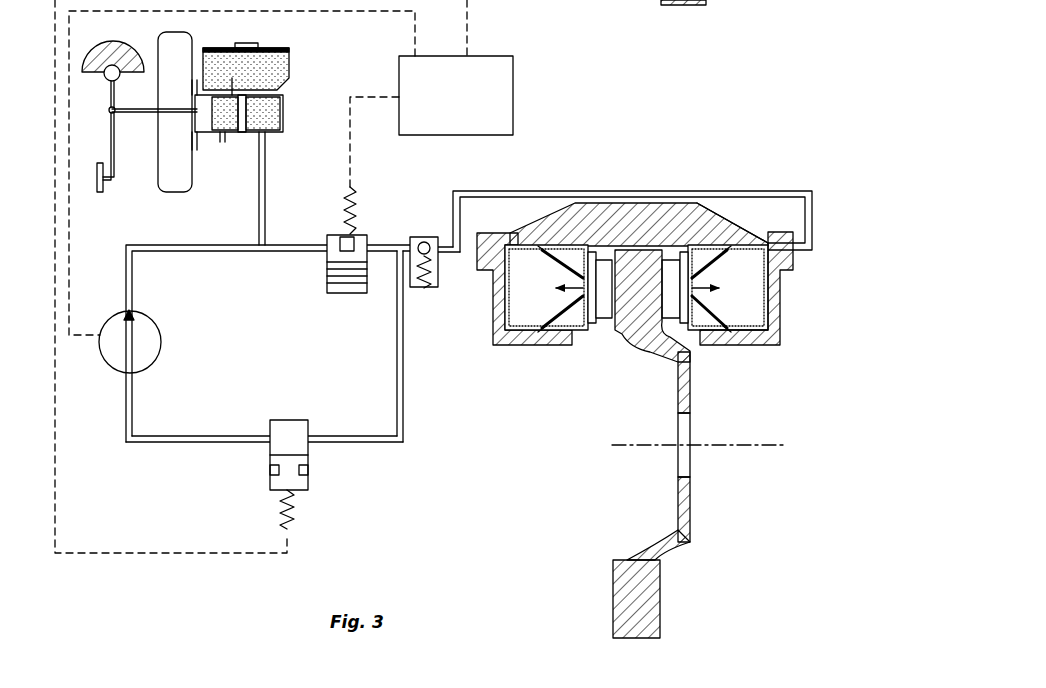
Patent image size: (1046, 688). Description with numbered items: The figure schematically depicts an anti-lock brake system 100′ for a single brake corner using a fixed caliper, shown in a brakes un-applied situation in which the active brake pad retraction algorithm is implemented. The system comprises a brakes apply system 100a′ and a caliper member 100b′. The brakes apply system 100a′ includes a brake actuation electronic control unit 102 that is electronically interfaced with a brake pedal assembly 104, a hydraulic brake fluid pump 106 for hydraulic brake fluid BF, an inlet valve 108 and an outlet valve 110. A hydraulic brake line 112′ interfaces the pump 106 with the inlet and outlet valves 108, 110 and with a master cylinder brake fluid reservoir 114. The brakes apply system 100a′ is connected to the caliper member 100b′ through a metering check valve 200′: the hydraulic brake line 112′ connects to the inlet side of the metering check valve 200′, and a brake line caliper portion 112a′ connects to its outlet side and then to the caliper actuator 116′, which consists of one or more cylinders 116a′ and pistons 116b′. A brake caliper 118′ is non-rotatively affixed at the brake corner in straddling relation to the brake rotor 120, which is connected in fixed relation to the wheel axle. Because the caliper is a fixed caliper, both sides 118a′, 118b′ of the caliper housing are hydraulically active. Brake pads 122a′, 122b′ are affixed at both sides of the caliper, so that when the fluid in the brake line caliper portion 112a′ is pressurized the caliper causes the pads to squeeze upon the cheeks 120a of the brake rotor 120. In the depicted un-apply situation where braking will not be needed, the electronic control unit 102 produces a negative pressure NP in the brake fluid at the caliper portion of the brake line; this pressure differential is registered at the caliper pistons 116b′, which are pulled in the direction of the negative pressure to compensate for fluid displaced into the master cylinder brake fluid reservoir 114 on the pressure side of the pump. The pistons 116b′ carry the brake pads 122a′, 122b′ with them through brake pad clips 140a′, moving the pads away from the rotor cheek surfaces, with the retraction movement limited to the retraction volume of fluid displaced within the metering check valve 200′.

The anti-lock brake system 100′ is at (681, 102).
The brakes apply system 100a′ is at (546, 112).
The caliper member 100b′ is at (688, 160).
The brake actuation electronic control unit 102 is at (513, 68).
The brake pedal assembly 104 is at (103, 147).
The hydraulic brake fluid pump 106 is at (162, 335).
The inlet valve 108 is at (327, 283).
The outlet valve 110 is at (308, 423).
The hydraulic brake line 112′ is at (240, 245).
The brake line caliper portion 112a′ is at (446, 246).
The master cylinder brake fluid reservoir 114 is at (246, 112).
The caliper actuator 116′ is at (490, 352).
The cylinder 116a′ is at (522, 246).
The piston 116b′ is at (522, 345).
The brake caliper 118′ is at (780, 303).
The first side of caliper housing 118a′ is at (522, 242).
The second side of caliper housing 118b′ is at (725, 220).
The brake rotor 120 is at (691, 401).
The cheeks of the brake rotor 120a is at (655, 258).
The brake pad 122a′ is at (598, 328).
The brake pad 122b′ is at (672, 333).
The brake pad clip 140a′ is at (585, 312).
The metering check valve 200′ is at (428, 296).
The hydraulic brake fluid BF is at (284, 62).
The negative pressure NP is at (155, 435).